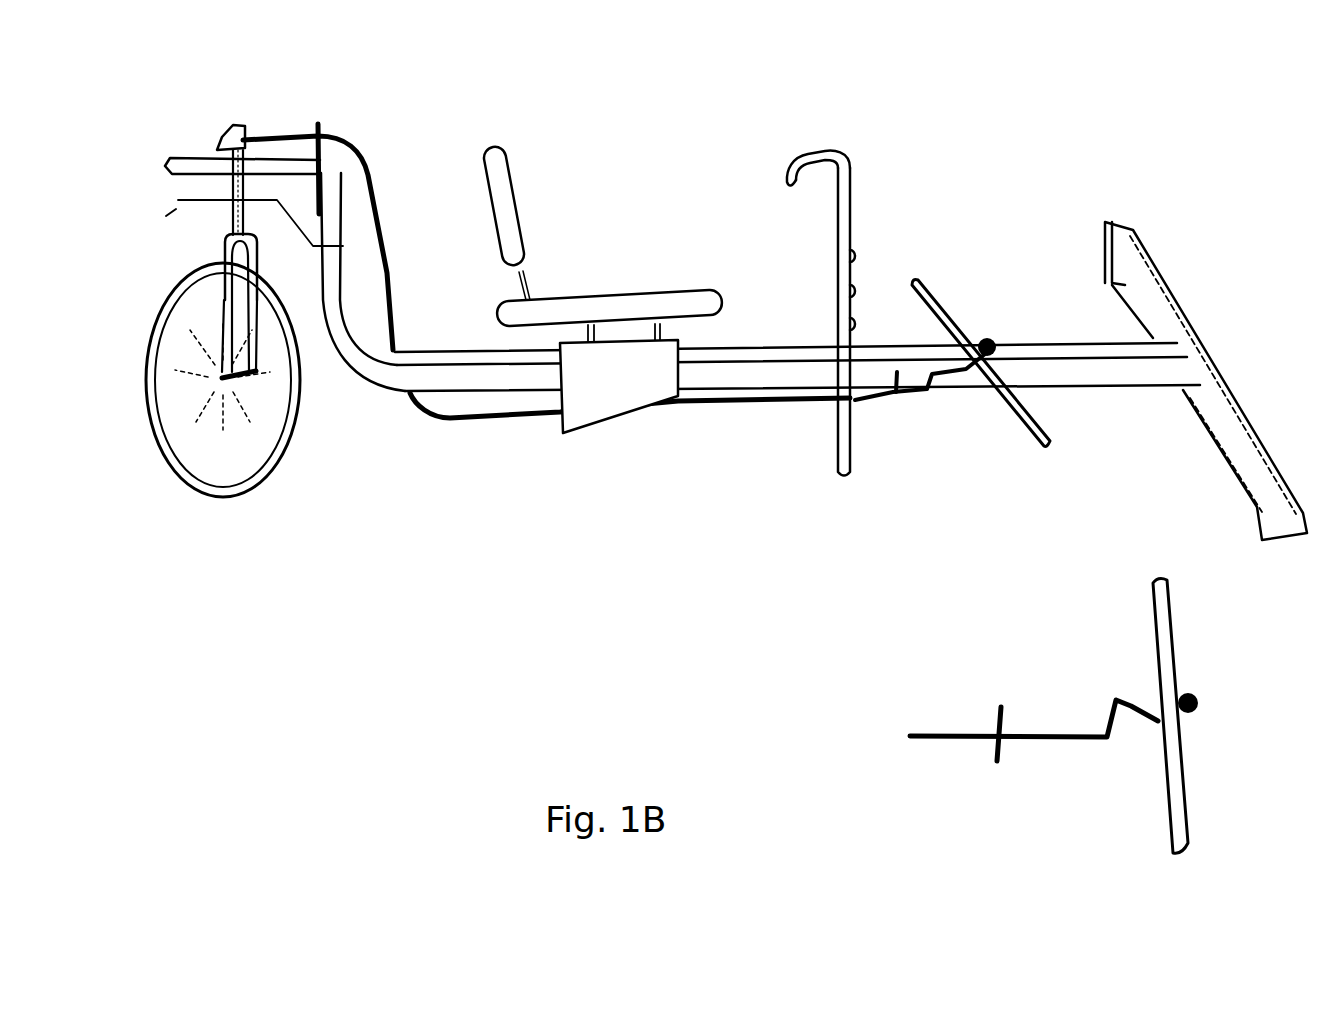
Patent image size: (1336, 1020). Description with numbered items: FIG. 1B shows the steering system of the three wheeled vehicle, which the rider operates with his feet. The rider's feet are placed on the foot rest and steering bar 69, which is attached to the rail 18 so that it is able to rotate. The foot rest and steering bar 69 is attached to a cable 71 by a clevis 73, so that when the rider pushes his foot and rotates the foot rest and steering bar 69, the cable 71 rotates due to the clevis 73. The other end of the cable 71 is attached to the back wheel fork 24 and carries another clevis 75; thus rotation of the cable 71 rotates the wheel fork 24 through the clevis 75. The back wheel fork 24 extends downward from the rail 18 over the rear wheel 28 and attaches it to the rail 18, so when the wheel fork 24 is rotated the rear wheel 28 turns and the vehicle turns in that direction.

The rail 18 is at (1137, 373).
The back wheel fork 24 is at (283, 213).
The rear wheel 28 is at (222, 496).
The foot rest and steering bar 69 is at (1020, 423).
The cable 71 is at (717, 413).
The clevis 73 is at (908, 400).
The clevis 75 is at (263, 137).